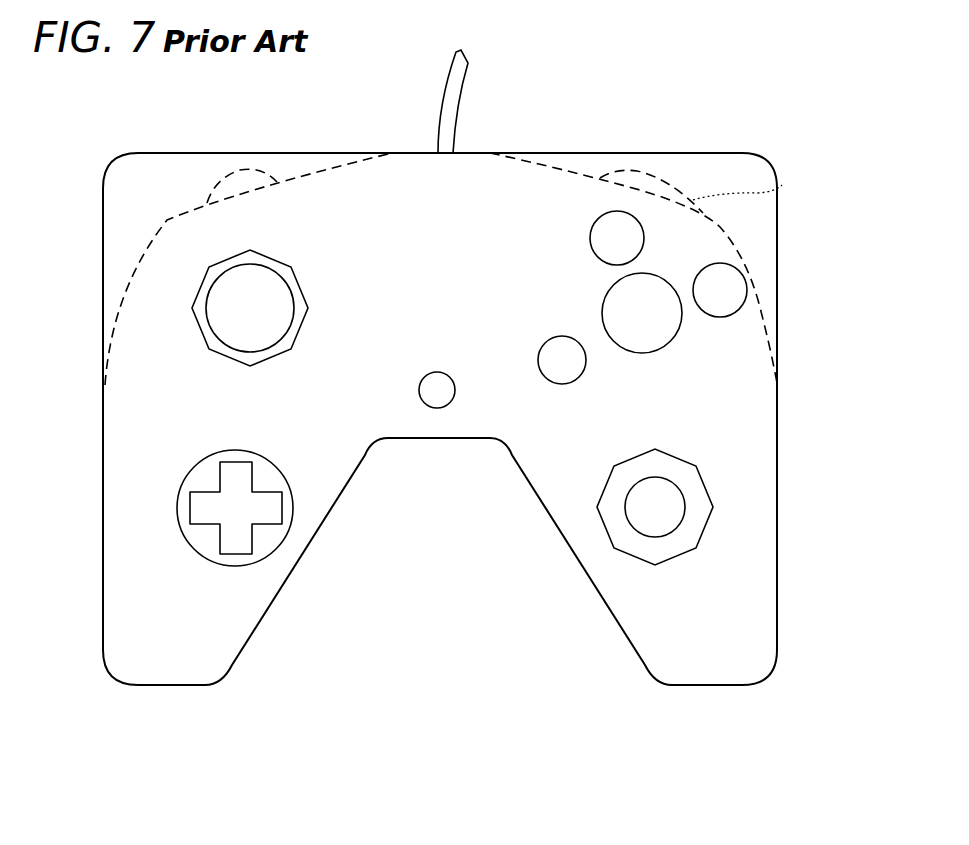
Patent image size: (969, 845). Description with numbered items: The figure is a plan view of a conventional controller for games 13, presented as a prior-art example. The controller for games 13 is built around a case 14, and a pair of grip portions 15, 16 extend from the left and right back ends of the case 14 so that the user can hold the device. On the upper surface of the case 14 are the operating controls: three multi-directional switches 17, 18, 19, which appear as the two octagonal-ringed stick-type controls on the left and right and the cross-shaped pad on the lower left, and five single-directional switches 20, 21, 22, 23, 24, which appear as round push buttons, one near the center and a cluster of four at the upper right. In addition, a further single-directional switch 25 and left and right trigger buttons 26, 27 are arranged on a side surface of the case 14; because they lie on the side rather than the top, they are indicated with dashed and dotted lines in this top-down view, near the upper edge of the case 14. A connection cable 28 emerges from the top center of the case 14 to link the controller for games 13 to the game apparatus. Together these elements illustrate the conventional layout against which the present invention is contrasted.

The controller for games 13 is at (558, 116).
The case 14 is at (497, 145).
The grip portion 15 is at (170, 670).
The grip portion 16 is at (705, 668).
The multi-directional switch 17 is at (220, 322).
The multi-directional switch 18 is at (238, 537).
The multi-directional switch 19 is at (640, 518).
The single-directional switch 20 is at (437, 401).
The single-directional switch 21 is at (572, 367).
The single-directional switch 22 is at (633, 242).
The single-directional switch 23 is at (663, 328).
The single-directional switch 24 is at (730, 292).
The single-directional switch 25 is at (463, 269).
The left trigger button 26 is at (227, 170).
The right trigger button 27 is at (660, 178).
The connection cable 28 is at (443, 93).